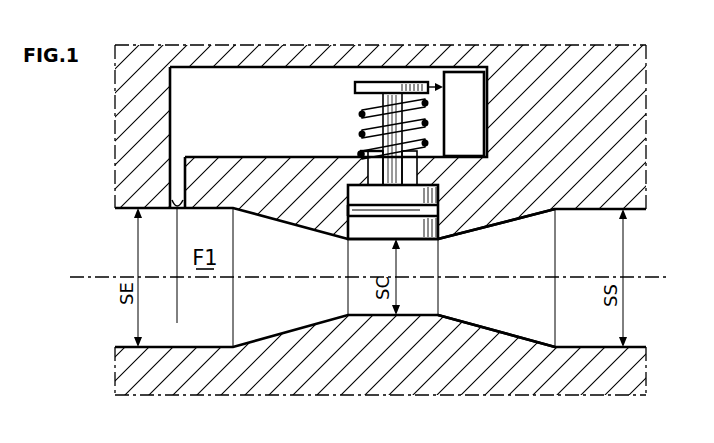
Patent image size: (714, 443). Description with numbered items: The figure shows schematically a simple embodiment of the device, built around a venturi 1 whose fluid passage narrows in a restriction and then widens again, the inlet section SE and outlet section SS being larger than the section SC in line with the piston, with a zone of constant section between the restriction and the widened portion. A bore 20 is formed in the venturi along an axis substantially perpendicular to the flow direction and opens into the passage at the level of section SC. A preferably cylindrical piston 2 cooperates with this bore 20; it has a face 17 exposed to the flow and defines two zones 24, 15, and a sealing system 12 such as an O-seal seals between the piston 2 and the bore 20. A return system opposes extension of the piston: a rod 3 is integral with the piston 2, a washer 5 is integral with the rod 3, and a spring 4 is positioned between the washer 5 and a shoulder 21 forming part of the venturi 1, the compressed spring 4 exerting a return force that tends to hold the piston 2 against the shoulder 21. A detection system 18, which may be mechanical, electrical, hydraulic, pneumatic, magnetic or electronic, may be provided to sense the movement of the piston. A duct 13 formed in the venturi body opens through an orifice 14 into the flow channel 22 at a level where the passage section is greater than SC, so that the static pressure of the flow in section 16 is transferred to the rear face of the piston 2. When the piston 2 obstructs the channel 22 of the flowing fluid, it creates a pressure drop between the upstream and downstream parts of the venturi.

The venturi 1 is at (617, 119).
The piston 2 is at (380, 228).
The rod 3 is at (360, 108).
The spring 4 is at (360, 113).
The washer 5 is at (402, 88).
The sealing system 12 is at (348, 211).
The duct 13 is at (227, 120).
The orifice 14 is at (177, 206).
The zone 15 is at (377, 177).
The section 16 is at (177, 323).
The piston face 17 is at (410, 240).
The detection system 18 is at (453, 118).
The bore 20 is at (439, 211).
The shoulder 21 is at (360, 154).
The flow channel 22 is at (118, 216).
The zone 24 is at (430, 297).